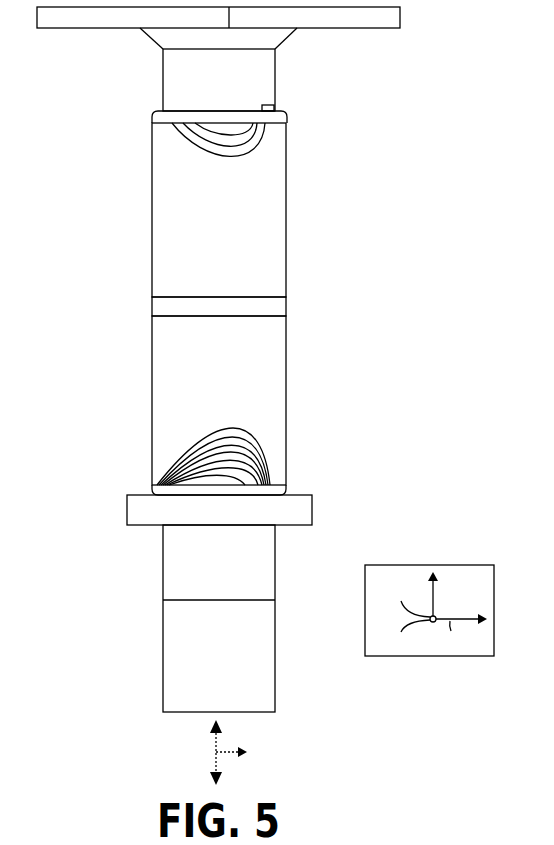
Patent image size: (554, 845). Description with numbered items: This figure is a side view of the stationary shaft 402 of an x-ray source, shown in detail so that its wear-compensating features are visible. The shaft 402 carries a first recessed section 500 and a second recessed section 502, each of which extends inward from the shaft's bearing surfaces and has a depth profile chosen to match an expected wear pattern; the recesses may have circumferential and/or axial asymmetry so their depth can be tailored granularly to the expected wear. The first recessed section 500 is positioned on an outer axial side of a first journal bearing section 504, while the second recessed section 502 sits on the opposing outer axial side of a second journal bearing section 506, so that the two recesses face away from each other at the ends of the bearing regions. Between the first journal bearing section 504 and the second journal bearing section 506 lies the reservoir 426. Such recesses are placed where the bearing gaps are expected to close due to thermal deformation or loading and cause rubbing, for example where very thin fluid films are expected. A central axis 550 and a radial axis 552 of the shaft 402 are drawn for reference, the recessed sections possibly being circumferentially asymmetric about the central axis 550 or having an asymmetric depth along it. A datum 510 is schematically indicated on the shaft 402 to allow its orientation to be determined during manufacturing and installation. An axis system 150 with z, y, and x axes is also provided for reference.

The shaft 402 is at (456, 198).
The datum 510 is at (264, 105).
The first journal bearing section 504 is at (142, 123).
The first recessed section 500 is at (190, 148).
The reservoir 426 is at (150, 306).
The second journal bearing section 506 is at (142, 316).
The second recessed section 502 is at (193, 430).
The axis system 150 is at (377, 565).
The central axis 550 is at (214, 769).
The radial axis 552 is at (228, 750).